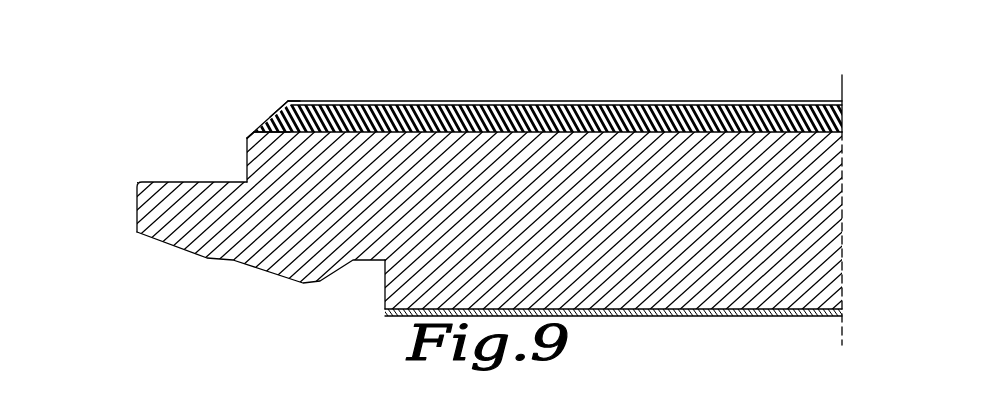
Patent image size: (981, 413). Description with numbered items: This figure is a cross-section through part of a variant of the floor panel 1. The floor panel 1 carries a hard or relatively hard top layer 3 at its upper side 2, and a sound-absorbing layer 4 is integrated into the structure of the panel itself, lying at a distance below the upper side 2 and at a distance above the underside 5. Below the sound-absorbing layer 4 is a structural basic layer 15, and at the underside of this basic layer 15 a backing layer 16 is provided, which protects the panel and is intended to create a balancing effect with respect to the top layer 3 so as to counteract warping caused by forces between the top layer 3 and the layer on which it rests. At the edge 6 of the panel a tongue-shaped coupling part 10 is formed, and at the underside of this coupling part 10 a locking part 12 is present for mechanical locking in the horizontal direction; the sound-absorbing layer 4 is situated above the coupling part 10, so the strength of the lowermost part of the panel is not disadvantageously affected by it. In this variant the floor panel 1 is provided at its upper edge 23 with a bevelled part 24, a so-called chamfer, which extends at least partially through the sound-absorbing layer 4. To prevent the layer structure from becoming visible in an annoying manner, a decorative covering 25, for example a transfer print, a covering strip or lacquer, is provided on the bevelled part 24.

The floor panel 1 is at (521, 72).
The upper side 2 is at (676, 100).
The top layer 3 is at (363, 102).
The sound-absorbing layer 4 is at (843, 115).
The underside 5 is at (638, 316).
The edge 6 is at (165, 260).
The coupling part 10 is at (147, 213).
The locking part 12 is at (303, 284).
The structural basic layer 15 is at (781, 270).
The backing layer 16 is at (722, 312).
The upper edge 23 is at (252, 99).
The bevelled part 24 is at (275, 107).
The decorative covering 25 is at (255, 132).